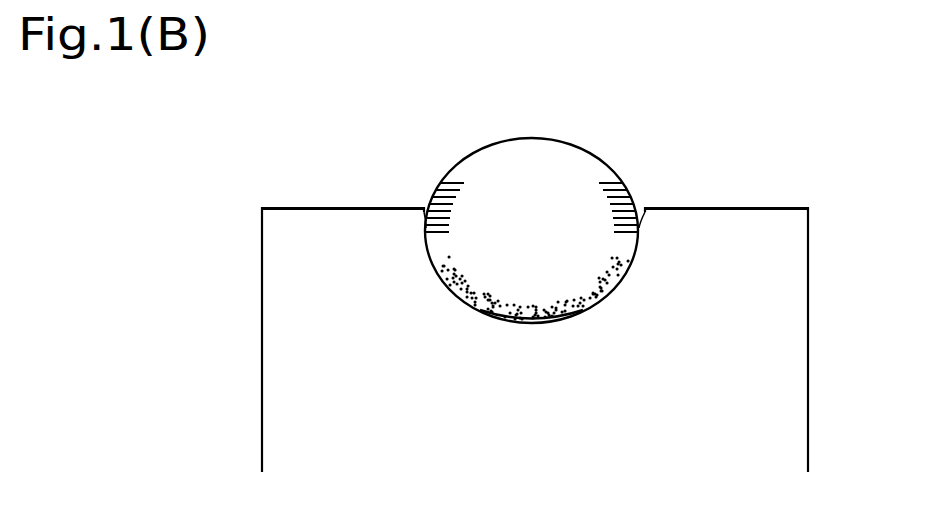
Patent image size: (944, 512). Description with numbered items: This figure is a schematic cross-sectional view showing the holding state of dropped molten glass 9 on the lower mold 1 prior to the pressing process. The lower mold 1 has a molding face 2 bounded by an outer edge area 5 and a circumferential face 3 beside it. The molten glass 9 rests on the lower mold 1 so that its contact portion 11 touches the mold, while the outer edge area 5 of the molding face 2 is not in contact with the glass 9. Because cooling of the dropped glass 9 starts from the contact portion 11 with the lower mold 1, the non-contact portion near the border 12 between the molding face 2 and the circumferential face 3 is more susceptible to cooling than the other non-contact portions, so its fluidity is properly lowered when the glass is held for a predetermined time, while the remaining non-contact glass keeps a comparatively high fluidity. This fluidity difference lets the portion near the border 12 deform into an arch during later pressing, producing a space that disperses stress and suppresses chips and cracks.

The lower mold 1 is at (792, 374).
The molding face 2 is at (526, 323).
The circumferential face 3 is at (317, 207).
The outer edge area 5 is at (424, 215).
The glass 9 is at (535, 152).
The contact portion 11 is at (463, 300).
The portion near the border 12 is at (450, 180).